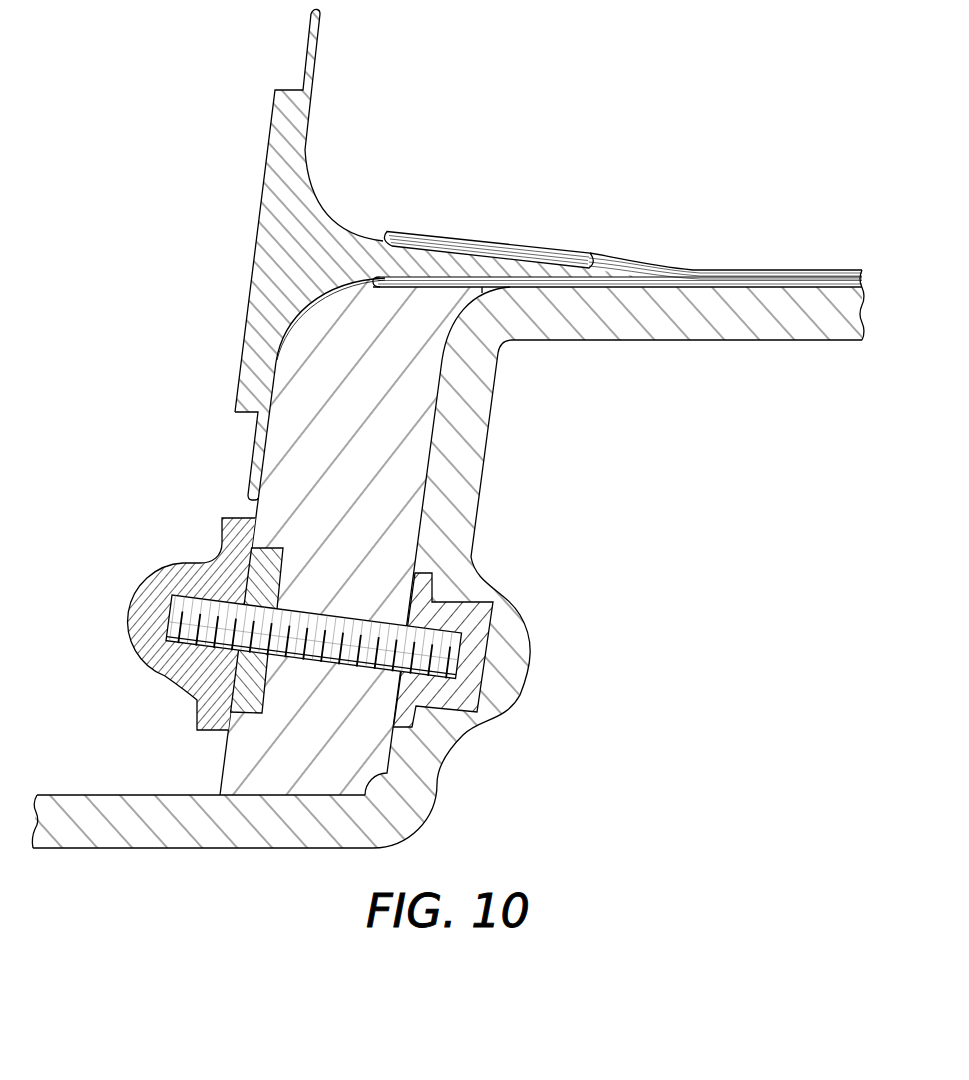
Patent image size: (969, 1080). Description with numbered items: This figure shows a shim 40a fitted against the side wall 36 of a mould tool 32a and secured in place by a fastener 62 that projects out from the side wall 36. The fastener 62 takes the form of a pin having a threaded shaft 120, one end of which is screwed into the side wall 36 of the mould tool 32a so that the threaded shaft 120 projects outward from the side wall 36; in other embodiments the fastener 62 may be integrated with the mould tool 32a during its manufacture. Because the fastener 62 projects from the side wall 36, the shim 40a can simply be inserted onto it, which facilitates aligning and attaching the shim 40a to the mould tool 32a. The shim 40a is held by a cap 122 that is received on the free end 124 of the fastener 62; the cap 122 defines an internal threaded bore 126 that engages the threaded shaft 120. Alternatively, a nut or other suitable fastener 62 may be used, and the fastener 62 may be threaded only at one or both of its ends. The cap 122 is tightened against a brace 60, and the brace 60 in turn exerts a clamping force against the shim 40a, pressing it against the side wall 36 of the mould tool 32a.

The mould tool 32a is at (427, 797).
The side wall 36 is at (487, 393).
The shim 40a is at (407, 457).
The brace 60 is at (240, 698).
The fastener 62 is at (490, 614).
The threaded shaft 120 is at (345, 627).
The cap 122 is at (128, 605).
The free end 124 is at (157, 673).
The internal threaded bore 126 is at (203, 592).